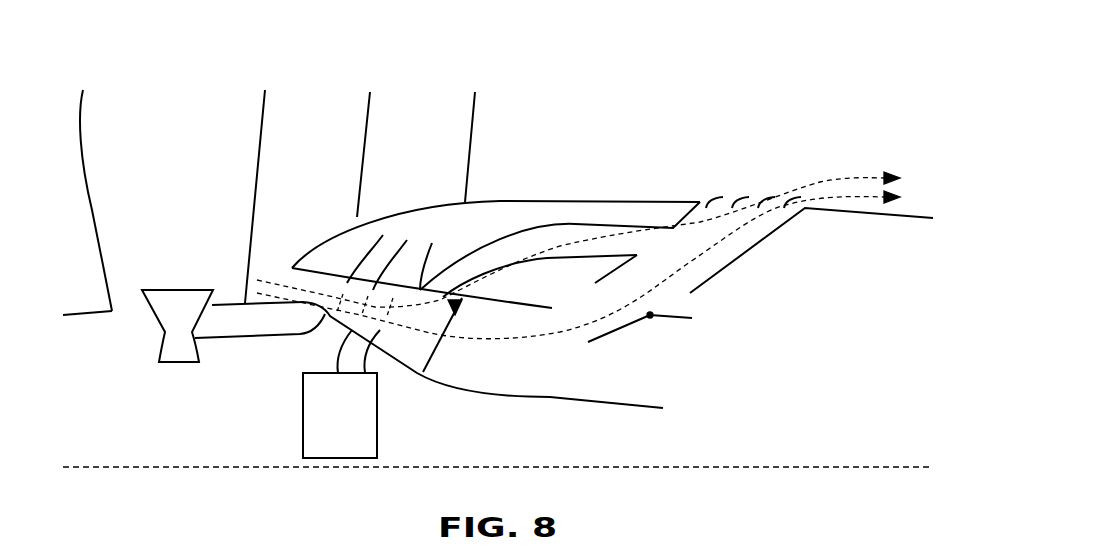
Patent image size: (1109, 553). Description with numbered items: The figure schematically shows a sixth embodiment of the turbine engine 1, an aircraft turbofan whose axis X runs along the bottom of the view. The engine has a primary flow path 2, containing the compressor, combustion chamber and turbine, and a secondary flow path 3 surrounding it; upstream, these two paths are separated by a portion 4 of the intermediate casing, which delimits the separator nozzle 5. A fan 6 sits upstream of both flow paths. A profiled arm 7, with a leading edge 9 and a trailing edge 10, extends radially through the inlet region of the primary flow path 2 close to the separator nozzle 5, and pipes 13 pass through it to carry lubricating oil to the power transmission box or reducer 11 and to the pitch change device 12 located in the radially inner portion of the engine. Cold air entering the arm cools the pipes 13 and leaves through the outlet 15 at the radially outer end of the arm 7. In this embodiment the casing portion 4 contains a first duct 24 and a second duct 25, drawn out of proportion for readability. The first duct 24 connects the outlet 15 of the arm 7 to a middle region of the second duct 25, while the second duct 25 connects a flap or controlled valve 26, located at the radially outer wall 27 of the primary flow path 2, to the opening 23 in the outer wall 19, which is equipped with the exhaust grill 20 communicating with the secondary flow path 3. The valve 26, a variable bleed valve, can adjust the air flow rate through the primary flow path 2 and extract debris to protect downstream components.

The turbine engine 1 is at (807, 102).
The primary flow path 2 is at (663, 375).
The secondary flow path 3 is at (322, 171).
The portion of intermediate casing 4 is at (905, 238).
The separator nozzle 5 is at (297, 262).
The fan 6 is at (120, 268).
The profiled arm 7 is at (403, 345).
The leading edge 9 is at (308, 300).
The trailing edge 10 is at (438, 347).
The power transmission box or lubricated reducer 11 is at (357, 428).
The pitch change device 12 is at (168, 315).
The pipes 13 is at (228, 340).
The outlet 15 is at (458, 308).
The outer wall 19 is at (870, 217).
The exhaust grill 20 is at (742, 198).
The opening 23 is at (702, 190).
The first duct 24 is at (543, 240).
The second duct 25 is at (730, 255).
The controlled valve 26 is at (598, 342).
The radially outer wall 27 is at (680, 320).